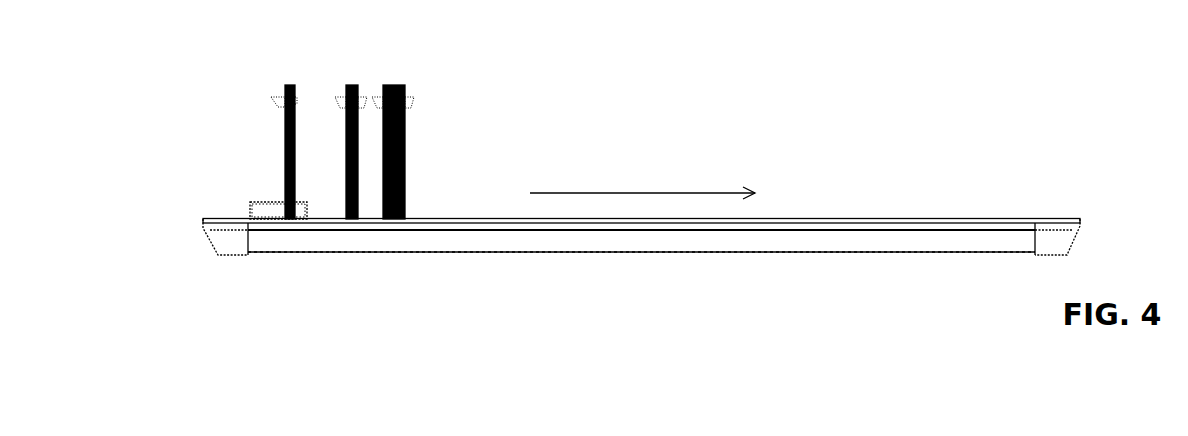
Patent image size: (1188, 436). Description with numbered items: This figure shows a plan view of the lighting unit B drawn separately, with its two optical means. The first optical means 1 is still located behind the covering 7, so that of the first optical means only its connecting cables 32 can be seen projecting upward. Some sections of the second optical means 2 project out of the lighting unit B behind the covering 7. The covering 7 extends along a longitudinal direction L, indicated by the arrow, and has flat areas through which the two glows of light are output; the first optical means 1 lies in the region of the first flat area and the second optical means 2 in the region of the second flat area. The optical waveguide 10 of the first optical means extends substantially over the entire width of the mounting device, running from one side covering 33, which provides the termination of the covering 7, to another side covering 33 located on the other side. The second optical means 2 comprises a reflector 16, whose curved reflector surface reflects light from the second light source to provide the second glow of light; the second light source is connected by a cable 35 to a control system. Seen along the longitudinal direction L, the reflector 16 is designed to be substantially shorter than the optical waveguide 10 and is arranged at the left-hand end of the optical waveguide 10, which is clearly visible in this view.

The first optical means 1 is at (397, 243).
The second optical means 2 is at (268, 208).
The covering 7 is at (500, 245).
The optical waveguide 10 is at (747, 245).
The reflector 16 is at (293, 208).
The connecting cables 32 is at (350, 148).
The side covering 33 is at (230, 246).
The cable 35 is at (288, 138).
The lighting unit B is at (852, 250).
The longitudinal direction L is at (642, 183).